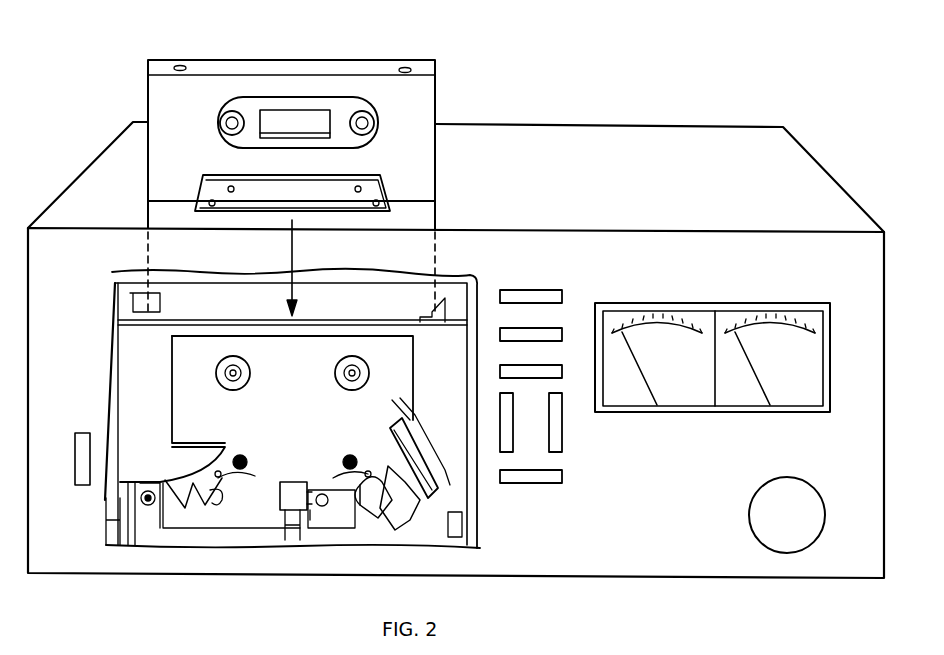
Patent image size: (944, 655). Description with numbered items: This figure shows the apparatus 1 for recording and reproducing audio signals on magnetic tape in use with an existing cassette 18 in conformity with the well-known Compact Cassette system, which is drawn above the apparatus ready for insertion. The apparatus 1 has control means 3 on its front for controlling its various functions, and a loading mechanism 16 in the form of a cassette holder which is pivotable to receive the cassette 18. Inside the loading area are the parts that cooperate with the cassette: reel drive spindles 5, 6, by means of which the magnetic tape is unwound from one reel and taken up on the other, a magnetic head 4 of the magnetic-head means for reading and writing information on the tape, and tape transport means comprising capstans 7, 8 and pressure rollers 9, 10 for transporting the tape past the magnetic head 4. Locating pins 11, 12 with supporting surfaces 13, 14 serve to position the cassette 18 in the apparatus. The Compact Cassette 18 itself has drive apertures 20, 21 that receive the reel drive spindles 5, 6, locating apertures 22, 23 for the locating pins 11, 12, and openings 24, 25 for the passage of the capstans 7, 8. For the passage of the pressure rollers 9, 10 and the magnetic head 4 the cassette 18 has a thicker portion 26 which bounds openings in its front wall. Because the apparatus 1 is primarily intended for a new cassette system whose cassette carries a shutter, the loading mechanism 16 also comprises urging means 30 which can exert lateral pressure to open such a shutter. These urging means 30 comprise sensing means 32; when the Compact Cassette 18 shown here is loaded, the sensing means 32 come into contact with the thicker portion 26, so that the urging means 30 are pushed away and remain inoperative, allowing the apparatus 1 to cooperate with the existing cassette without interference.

The apparatus 1 is at (832, 168).
The control means 3 is at (568, 297).
The magnetic head 4 is at (294, 488).
The reel drive spindle 5 is at (217, 367).
The reel drive spindle 6 is at (336, 367).
The capstan 7 is at (242, 471).
The capstan 8 is at (346, 471).
The pressure roller 9 is at (220, 498).
The pressure roller 10 is at (362, 508).
The locating pin 11 is at (240, 458).
The locating pin 12 is at (347, 458).
The supporting surface 13 is at (246, 458).
The supporting surface 14 is at (366, 450).
The loading mechanism 16 is at (118, 345).
The cassette 18 is at (232, 62).
The drive aperture 20 is at (228, 120).
The drive aperture 21 is at (368, 118).
The locating aperture 22 is at (231, 185).
The locating aperture 23 is at (360, 185).
The opening 24 is at (212, 207).
The opening 25 is at (376, 207).
The thicker portion 26 is at (320, 202).
The urging means 30 is at (390, 452).
The sensing means 32 is at (394, 414).